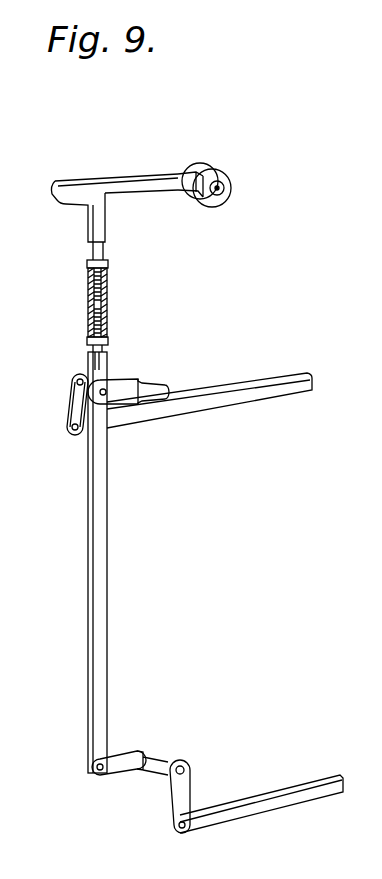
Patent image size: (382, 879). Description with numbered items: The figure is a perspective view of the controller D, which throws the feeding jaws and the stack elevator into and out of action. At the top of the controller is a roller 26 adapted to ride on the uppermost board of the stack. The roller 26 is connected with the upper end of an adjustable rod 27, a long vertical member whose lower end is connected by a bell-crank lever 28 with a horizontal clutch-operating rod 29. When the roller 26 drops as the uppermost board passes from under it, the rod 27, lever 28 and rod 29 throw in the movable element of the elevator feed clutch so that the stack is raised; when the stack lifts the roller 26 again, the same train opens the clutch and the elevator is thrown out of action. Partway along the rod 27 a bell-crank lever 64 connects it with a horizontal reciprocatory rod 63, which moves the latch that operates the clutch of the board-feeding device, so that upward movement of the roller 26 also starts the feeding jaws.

The roller 26 is at (200, 205).
The controller D is at (79, 305).
The adjustable rod 27 is at (100, 585).
The horizontal reciprocatory rod 63 is at (228, 388).
The bell-crank lever 64 is at (65, 412).
The bell-crank lever 28 is at (167, 792).
The horizontal clutch-operating rod 29 is at (252, 800).